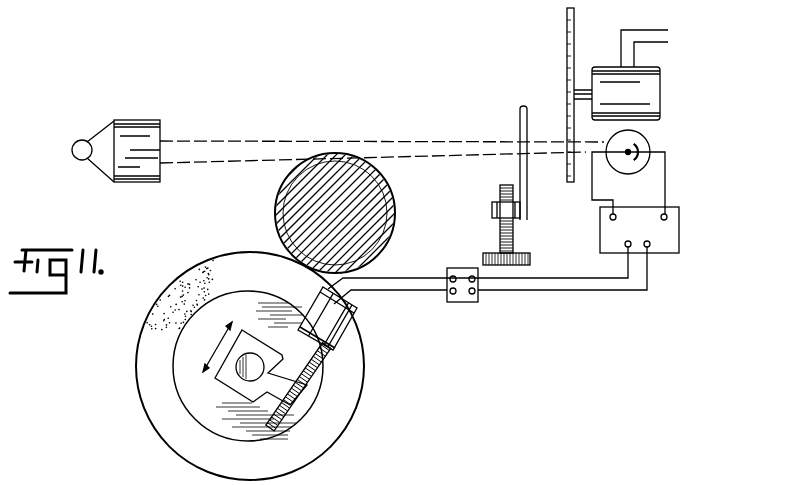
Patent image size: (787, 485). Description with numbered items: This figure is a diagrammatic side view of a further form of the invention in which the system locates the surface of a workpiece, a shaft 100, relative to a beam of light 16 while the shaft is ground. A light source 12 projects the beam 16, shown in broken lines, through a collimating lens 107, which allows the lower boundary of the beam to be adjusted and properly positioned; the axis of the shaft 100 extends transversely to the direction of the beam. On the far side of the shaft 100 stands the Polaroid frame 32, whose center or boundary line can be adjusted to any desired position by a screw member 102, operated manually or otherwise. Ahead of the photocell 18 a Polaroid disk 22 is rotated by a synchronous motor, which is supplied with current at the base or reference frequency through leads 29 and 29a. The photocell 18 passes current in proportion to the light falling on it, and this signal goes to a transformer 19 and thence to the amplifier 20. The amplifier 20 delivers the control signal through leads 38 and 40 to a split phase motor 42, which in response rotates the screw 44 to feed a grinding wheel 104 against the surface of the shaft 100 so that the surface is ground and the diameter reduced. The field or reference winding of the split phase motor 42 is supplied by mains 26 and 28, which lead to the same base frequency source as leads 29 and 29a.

The light source 12 is at (82, 150).
The collimating lens 107 is at (145, 128).
The beam of light 16 is at (287, 150).
The shaft 100 is at (388, 210).
The Polaroid frame 32 is at (514, 113).
The Polaroid disk 22 is at (574, 23).
The lead 29 is at (641, 30).
The lead 29a is at (658, 42).
The photocell 18 is at (647, 143).
The transformer 19 is at (670, 233).
The screw member 102 is at (512, 240).
The lead 38 is at (548, 280).
The lead 40 is at (562, 292).
The amplifier 20 is at (463, 302).
The grinding wheel 104 is at (145, 367).
The screw 44 is at (353, 372).
The main 28 is at (347, 332).
The split phase motor 42 is at (361, 306).
The main 26 is at (345, 325).